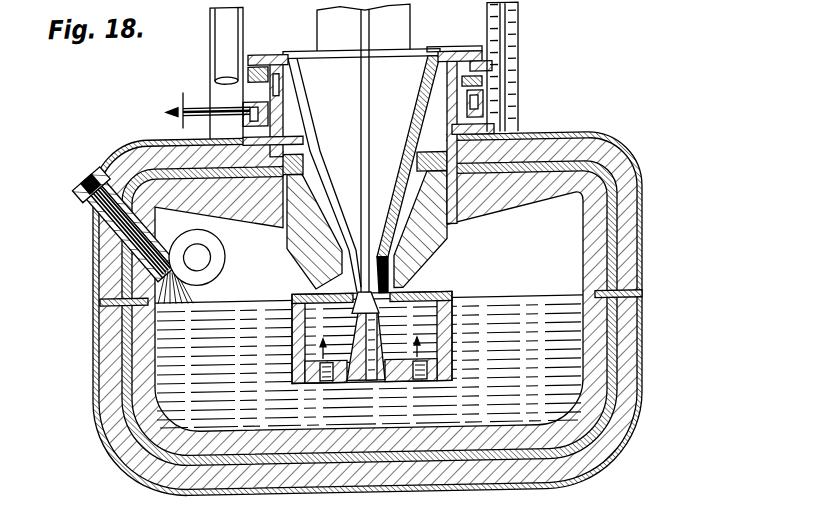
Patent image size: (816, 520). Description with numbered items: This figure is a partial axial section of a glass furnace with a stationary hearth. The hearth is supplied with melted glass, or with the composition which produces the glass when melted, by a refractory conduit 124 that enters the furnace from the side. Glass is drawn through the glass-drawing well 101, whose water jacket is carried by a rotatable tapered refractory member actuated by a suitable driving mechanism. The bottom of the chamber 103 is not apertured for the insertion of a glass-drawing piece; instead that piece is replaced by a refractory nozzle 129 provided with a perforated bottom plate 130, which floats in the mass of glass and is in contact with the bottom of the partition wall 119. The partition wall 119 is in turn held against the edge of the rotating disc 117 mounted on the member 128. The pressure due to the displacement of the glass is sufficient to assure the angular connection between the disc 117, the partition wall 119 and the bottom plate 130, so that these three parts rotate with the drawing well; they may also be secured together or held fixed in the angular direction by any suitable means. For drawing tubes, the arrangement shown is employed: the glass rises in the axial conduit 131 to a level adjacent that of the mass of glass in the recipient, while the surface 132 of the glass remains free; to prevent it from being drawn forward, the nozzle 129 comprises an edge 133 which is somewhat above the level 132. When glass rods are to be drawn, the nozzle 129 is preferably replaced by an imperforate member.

The glass-drawing well 101 is at (403, 156).
The chamber 103 is at (447, 435).
The rotating disc 117 is at (422, 291).
The partition wall 119 is at (297, 338).
The refractory conduit 124 is at (88, 186).
The member 128 is at (437, 236).
The refractory nozzle 129 is at (456, 296).
The perforated bottom plate 130 is at (398, 374).
The axial conduit 131 is at (365, 381).
The surface of the glass 132 is at (300, 305).
The edge 133 is at (325, 283).